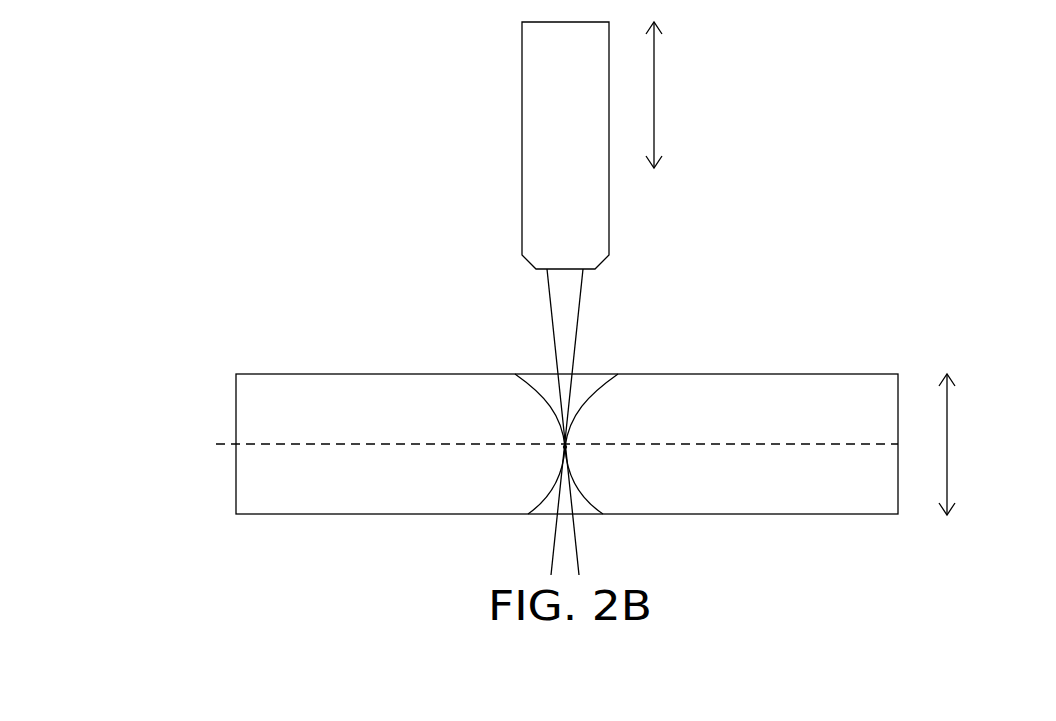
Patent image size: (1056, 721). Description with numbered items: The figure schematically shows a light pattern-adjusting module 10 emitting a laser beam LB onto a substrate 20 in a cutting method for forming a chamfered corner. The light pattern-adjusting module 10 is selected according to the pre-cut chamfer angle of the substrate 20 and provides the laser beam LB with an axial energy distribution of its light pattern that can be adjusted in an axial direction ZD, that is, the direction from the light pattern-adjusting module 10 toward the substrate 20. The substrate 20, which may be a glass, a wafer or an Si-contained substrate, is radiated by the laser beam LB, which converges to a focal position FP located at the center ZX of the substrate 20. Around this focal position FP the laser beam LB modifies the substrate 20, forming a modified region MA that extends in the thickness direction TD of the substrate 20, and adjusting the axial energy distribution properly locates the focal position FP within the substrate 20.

The light pattern-adjusting module 10 is at (522, 95).
The substrate 20 is at (236, 403).
The laser beam LB is at (582, 307).
The modified region MA is at (527, 362).
The focal position FP is at (568, 440).
The center of the substrate ZX is at (532, 443).
The axial direction ZD is at (655, 98).
The thickness direction TD is at (948, 437).